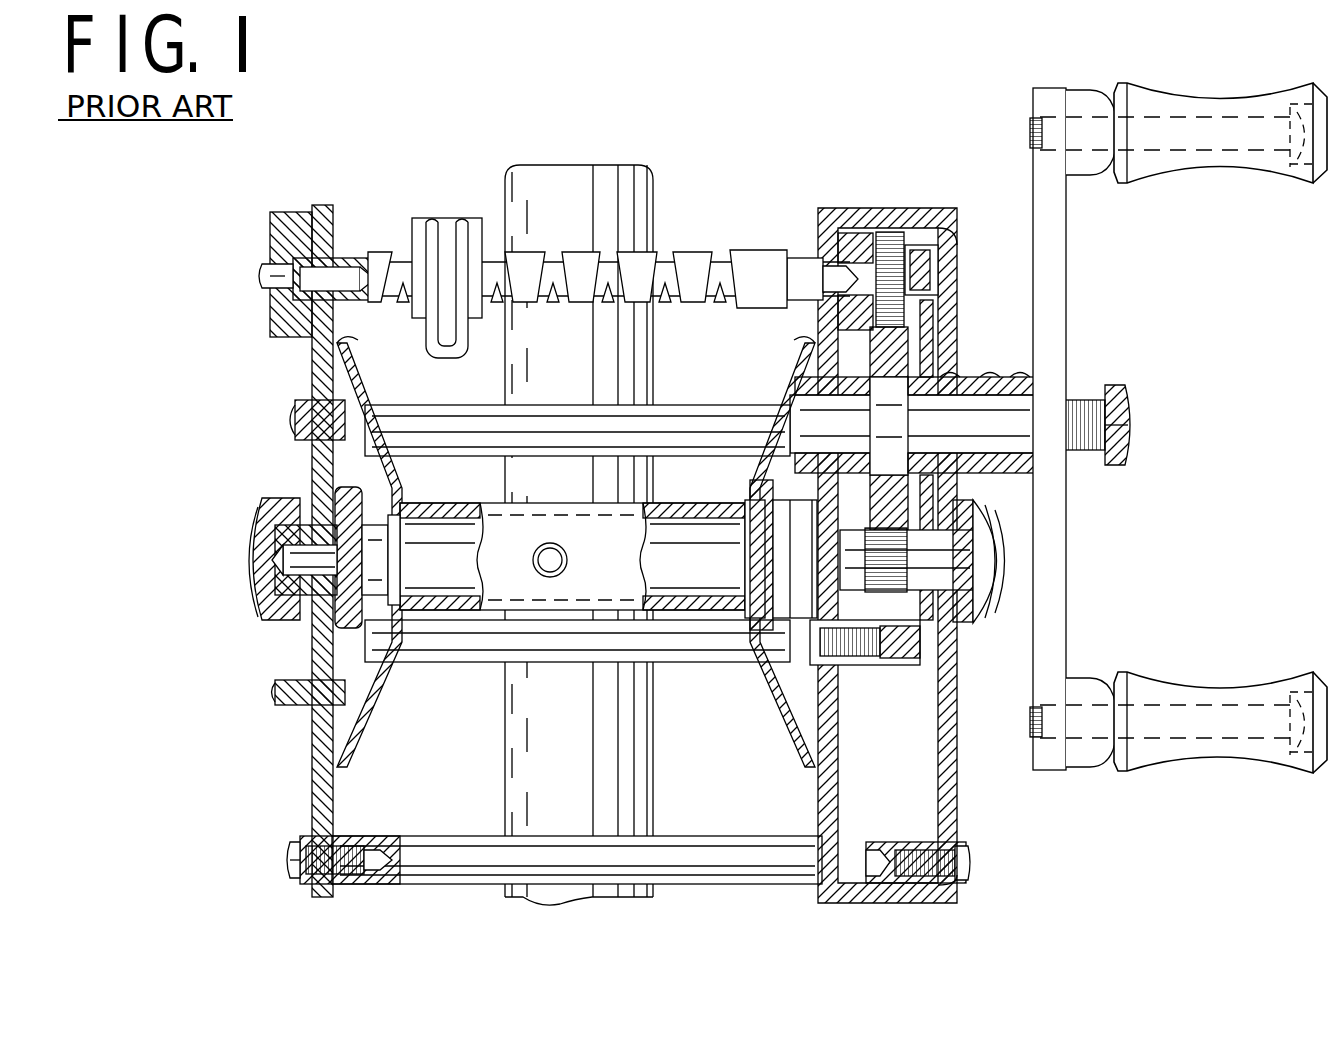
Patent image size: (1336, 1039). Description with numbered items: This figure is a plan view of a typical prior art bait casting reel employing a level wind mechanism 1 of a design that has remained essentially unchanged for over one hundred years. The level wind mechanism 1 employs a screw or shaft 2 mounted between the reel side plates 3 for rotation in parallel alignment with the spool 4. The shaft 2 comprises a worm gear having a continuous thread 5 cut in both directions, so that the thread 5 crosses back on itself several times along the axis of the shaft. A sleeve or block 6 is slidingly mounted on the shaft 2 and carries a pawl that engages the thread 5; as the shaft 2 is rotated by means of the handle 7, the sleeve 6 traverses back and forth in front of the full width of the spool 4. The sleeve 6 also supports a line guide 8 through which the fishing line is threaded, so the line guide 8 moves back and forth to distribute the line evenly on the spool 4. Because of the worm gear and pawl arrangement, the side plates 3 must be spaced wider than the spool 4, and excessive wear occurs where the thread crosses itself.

The level wind mechanism 1 is at (390, 232).
The shaft 2 is at (620, 221).
The reel side plates 3 is at (365, 333).
The spool 4 is at (440, 580).
The thread 5 is at (600, 275).
The sleeve 6 is at (438, 269).
The handle 7 is at (1160, 165).
The line guide 8 is at (445, 356).